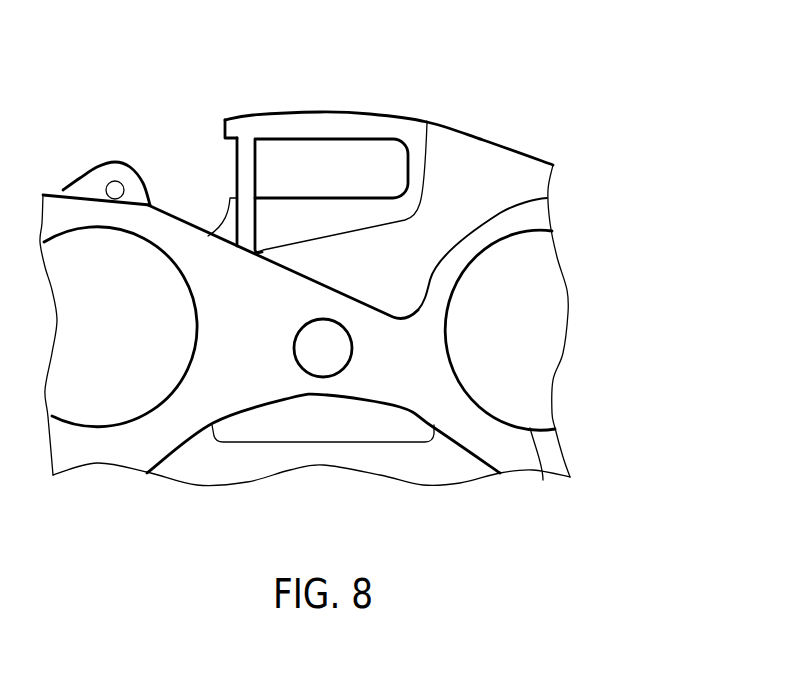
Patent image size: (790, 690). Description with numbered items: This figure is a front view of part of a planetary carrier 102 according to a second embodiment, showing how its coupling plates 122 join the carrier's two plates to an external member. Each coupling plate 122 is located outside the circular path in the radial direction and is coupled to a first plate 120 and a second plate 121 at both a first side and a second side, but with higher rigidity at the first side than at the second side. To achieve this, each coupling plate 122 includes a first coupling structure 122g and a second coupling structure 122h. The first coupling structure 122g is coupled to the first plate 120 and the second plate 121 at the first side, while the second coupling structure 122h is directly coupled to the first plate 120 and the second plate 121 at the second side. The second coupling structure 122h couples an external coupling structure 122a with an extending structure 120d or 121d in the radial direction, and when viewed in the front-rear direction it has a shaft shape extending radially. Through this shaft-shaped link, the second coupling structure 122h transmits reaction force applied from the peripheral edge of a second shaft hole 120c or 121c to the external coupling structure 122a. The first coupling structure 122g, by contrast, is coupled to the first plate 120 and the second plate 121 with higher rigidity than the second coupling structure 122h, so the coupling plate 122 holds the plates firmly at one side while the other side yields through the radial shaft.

The planetary carrier 102 is at (622, 158).
The first plate 120 is at (477, 153).
The second plate 121 is at (448, 140).
The coupling plate 122 is at (285, 123).
The external coupling structure 122a is at (243, 127).
The first coupling structure 122g is at (470, 192).
The second coupling structure 122h is at (243, 168).
The second shaft hole 120c is at (587, 485).
The second shaft hole 121c is at (543, 472).
The extending structure 120d is at (324, 483).
The extending structure 121d is at (322, 443).